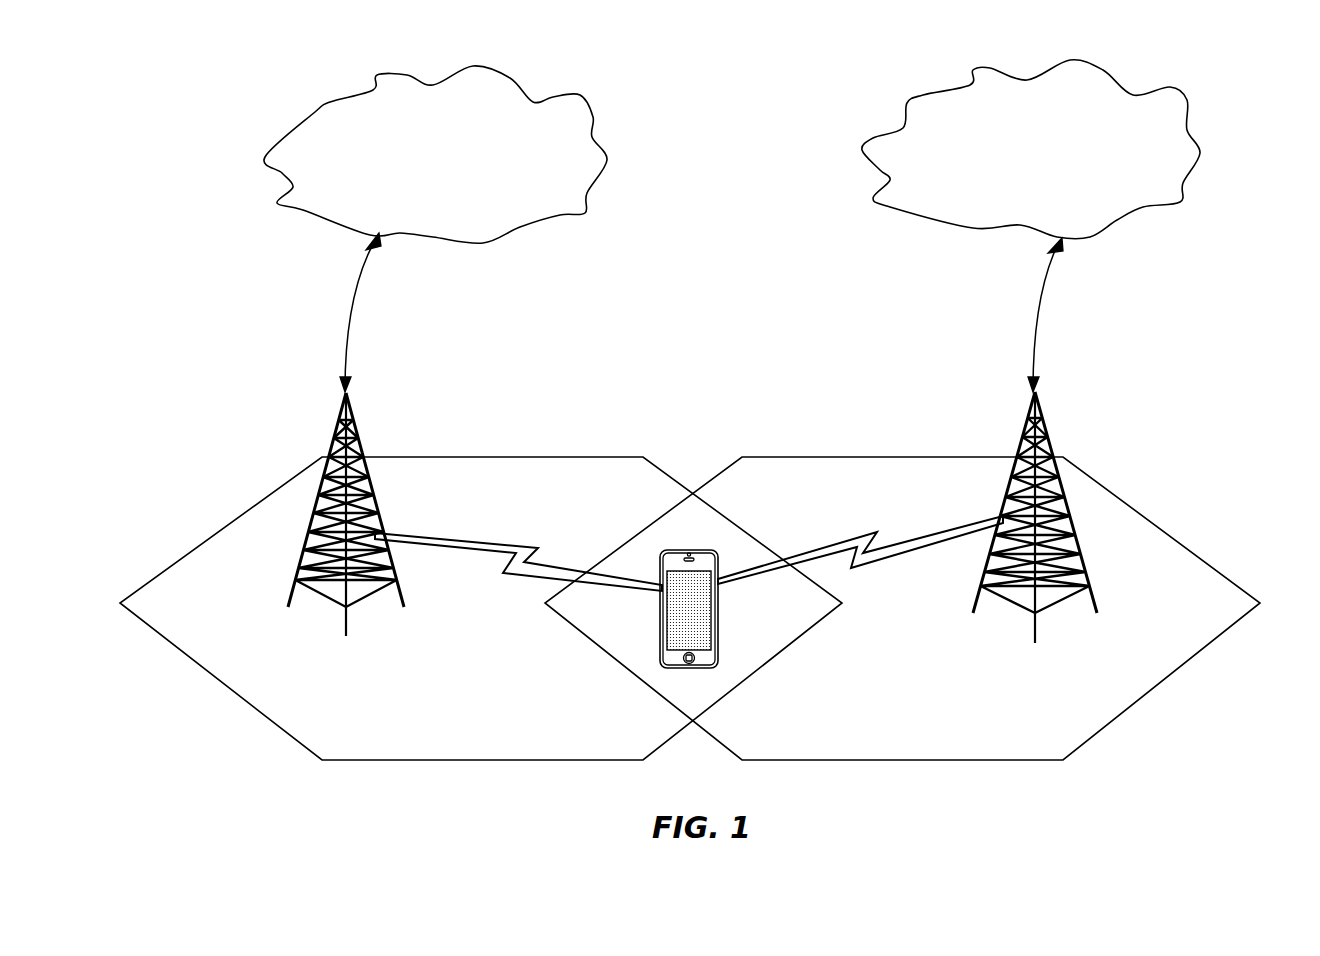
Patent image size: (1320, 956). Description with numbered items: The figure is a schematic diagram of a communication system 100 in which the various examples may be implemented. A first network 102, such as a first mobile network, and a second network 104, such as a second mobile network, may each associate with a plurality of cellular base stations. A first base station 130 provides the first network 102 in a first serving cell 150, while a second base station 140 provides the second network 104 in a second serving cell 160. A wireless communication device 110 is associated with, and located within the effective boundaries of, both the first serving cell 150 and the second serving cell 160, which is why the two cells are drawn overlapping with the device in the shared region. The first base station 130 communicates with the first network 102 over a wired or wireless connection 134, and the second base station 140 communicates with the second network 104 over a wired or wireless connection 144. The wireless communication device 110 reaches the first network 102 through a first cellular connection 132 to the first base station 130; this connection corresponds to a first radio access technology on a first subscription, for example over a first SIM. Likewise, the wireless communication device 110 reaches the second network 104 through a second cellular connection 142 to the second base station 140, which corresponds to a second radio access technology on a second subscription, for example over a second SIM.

The communication system 100 is at (740, 142).
The first network 102 is at (330, 101).
The second network 104 is at (1005, 70).
The wireless communication device 110 is at (716, 596).
The first base station 130 is at (306, 568).
The first cellular connection 132 is at (533, 578).
The wired or wireless connection 134 is at (350, 302).
The second base station 140 is at (1077, 568).
The second cellular connection 142 is at (862, 537).
The wired or wireless connection 144 is at (1038, 302).
The first serving cell 150 is at (533, 457).
The second serving cell 160 is at (873, 457).